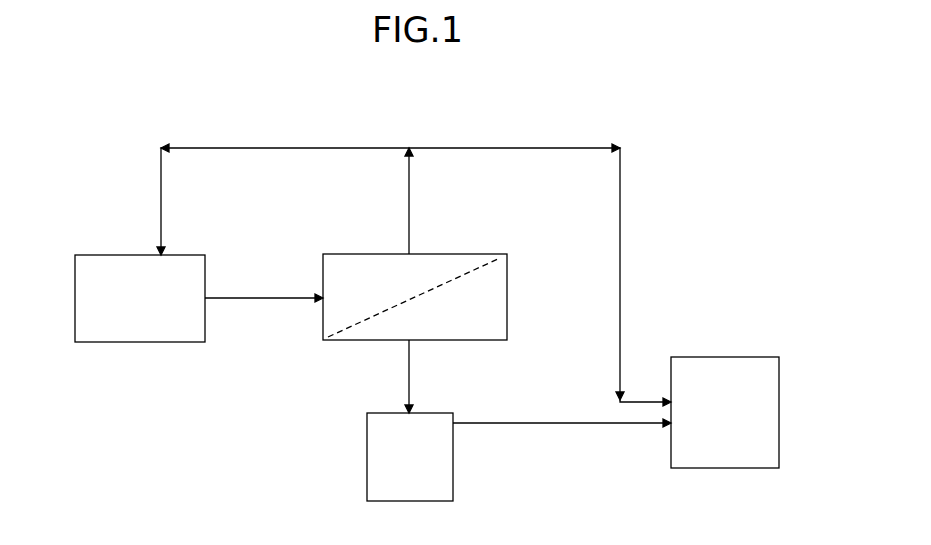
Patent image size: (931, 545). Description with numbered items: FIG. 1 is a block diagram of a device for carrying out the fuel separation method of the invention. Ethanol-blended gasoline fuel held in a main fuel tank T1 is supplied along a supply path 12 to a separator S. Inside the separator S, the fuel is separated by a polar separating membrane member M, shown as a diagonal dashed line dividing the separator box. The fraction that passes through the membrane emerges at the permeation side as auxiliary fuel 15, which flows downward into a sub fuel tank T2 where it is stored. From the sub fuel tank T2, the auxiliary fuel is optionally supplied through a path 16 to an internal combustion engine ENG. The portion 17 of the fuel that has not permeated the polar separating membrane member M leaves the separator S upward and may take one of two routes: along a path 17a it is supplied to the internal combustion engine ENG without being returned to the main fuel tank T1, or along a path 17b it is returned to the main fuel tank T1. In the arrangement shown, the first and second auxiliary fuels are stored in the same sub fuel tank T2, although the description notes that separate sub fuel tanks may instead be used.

The main fuel tank T1 is at (140, 254).
The sub fuel tank T2 is at (373, 451).
The separator S is at (450, 315).
The polar separating membrane member M is at (438, 297).
The internal combustion engine ENG is at (725, 368).
The supply of ethanol-blended gasoline fuel to the separator 12 is at (264, 269).
The auxiliary fuel 15 is at (365, 376).
The supply of auxiliary fuel to the internal combustion engine 16 is at (562, 395).
The portion not permeating the polar separating membrane member 17 is at (450, 201).
The supply of non-permeated portion to the internal combustion engine 17a is at (540, 245).
The return of non-permeated portion to the main fuel tank 17b is at (283, 168).